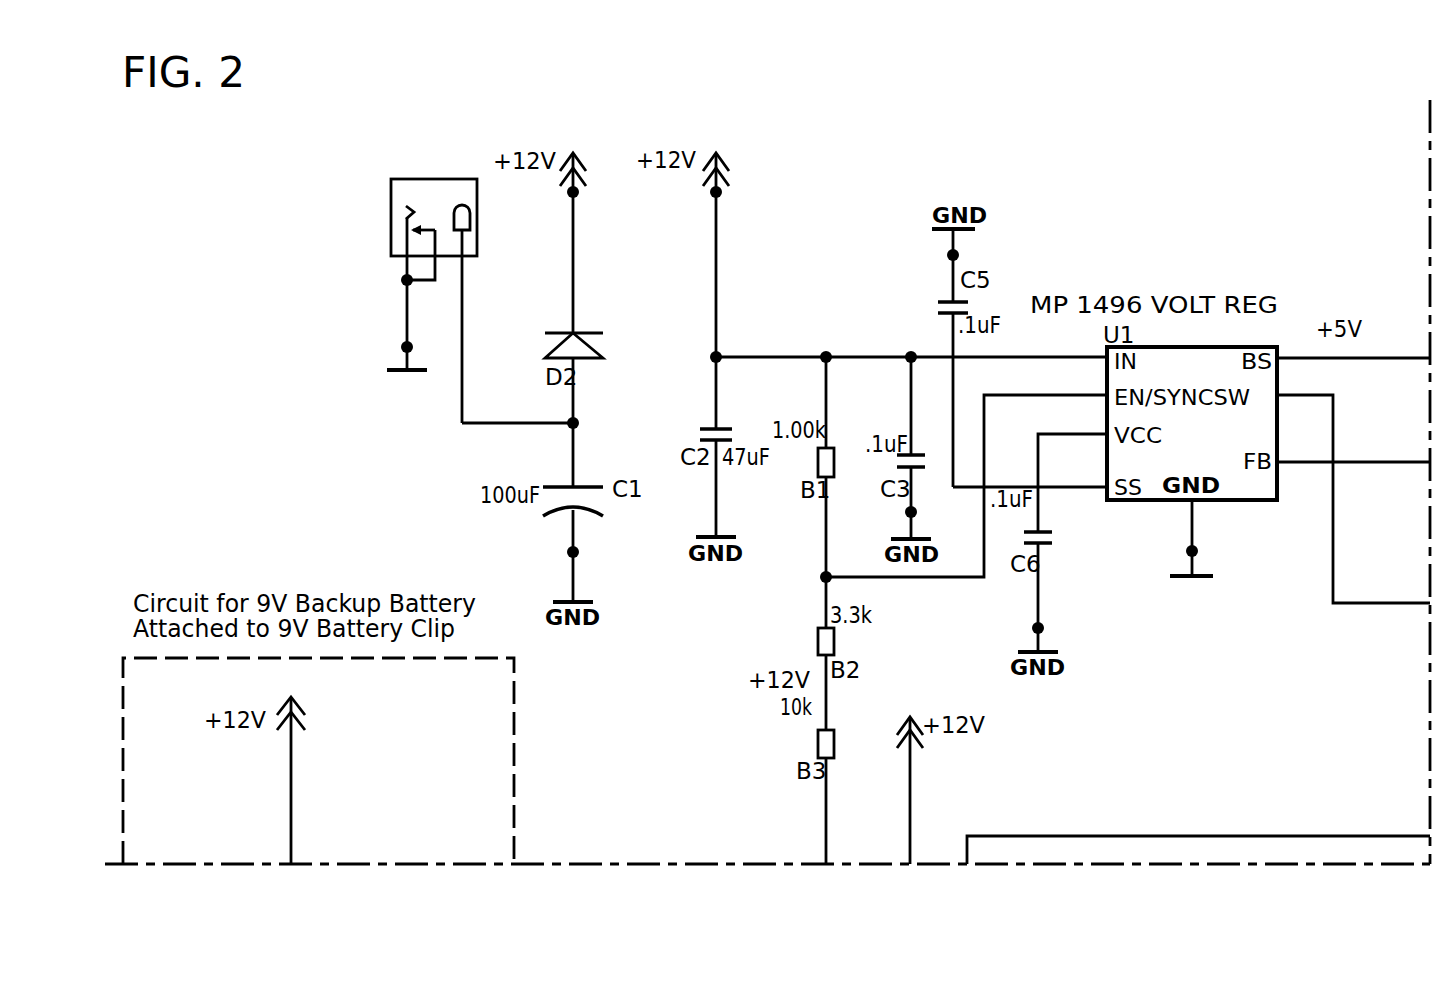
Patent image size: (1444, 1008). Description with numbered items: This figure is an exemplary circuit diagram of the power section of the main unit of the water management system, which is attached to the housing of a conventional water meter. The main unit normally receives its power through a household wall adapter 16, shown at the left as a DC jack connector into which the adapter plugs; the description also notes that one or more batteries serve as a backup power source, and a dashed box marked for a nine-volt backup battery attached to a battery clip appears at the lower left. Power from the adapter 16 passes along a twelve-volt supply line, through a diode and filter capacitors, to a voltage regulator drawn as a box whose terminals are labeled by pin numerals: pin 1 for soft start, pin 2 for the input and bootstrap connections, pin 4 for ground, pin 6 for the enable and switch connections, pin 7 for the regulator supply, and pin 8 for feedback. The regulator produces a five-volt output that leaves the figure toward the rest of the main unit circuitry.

The household wall adapter 16 is at (350, 304).
The U1 pin 1 (SS, soft start) 1 is at (1078, 474).
The U1 pin 2 (IN / BS) 2 is at (1240, 345).
The U1 pin 4 (GND) 4 is at (1191, 552).
The U1 pin 6 (EN/SYNC / SW) 6 is at (1240, 486).
The U1 pin 7 (VCC) 7 is at (1078, 421).
The U1 pin 8 (FB, feedback) 8 is at (1353, 452).